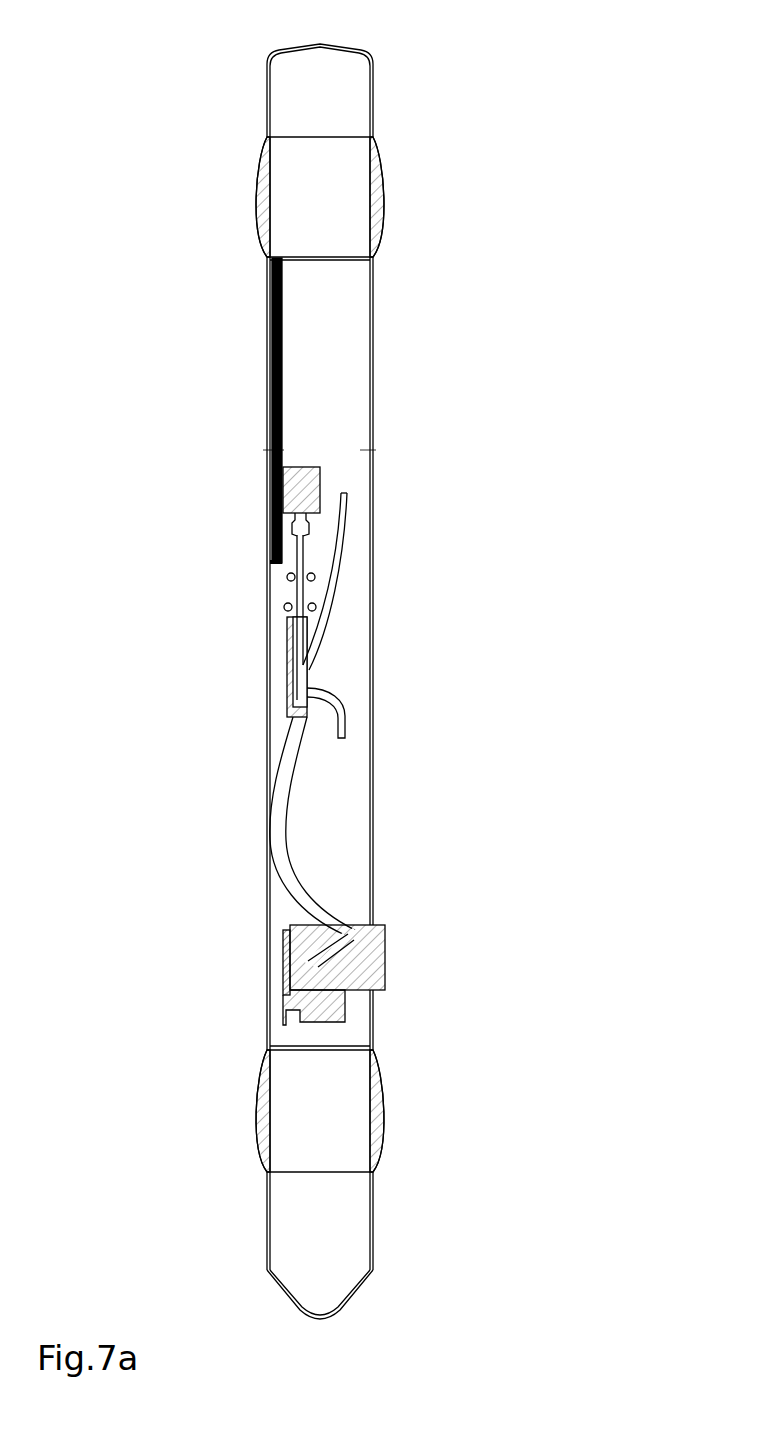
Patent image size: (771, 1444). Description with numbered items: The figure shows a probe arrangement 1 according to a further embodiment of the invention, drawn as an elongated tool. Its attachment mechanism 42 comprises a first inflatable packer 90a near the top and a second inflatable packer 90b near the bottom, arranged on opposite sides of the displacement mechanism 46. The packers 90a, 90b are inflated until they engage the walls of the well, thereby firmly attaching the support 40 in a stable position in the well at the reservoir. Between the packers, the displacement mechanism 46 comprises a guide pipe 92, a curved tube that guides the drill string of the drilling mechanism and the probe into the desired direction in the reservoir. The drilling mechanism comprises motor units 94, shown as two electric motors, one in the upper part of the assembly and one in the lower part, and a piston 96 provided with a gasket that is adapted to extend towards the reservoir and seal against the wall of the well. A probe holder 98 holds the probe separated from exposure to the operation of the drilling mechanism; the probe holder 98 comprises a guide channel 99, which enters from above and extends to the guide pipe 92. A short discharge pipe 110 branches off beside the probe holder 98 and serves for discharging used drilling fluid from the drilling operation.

The probe arrangement 1 is at (613, 76).
The attachment mechanism 42 is at (437, 135).
The first inflatable packer 90a is at (383, 205).
The support 40 is at (370, 370).
The displacement mechanism 46 is at (418, 500).
The motor unit 94 is at (300, 492).
The guide channel 99 is at (345, 578).
The probe holder 98 is at (405, 595).
The discharge pipe 110 is at (343, 707).
The guide pipe 92 is at (282, 836).
The piston 96 is at (385, 967).
The second inflatable packer 90b is at (383, 1105).